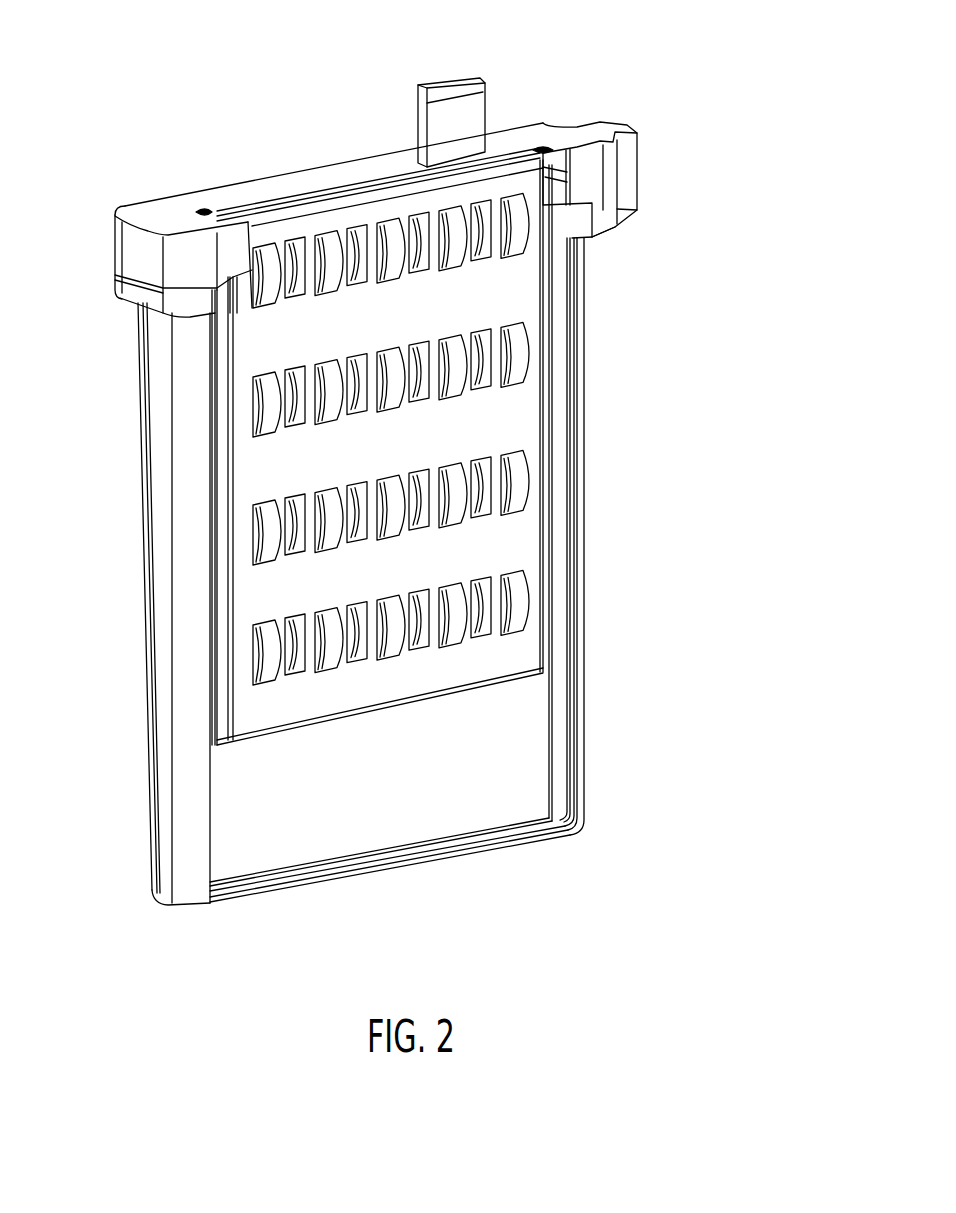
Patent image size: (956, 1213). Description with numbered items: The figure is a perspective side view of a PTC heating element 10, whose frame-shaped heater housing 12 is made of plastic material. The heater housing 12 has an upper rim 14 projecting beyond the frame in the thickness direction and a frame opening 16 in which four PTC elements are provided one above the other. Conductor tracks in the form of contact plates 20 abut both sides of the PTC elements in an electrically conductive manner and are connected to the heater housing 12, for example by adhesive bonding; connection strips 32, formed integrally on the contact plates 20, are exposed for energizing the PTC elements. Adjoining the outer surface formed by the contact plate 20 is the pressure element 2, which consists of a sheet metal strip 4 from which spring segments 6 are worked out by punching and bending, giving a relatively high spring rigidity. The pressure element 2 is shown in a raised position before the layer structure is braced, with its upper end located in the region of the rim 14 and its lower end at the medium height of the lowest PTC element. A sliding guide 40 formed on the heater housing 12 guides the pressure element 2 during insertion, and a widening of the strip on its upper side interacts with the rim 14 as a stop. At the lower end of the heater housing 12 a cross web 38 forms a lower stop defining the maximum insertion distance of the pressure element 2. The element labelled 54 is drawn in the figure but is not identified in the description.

The PTC heating element 10 is at (163, 117).
The sliding guide 40 is at (203, 213).
The heater housing 12 is at (440, 147).
The connection strips 32 is at (455, 102).
The upper rim 14 is at (630, 130).
The pressure element 2 is at (363, 439).
The sheet metal strip 4 is at (522, 405).
The frame opening 16 is at (528, 524).
The contact plates 20 is at (498, 762).
The cross web 38 is at (428, 858).
The left post 54 is at (212, 722).
The spring segments 6 is at (253, 294).